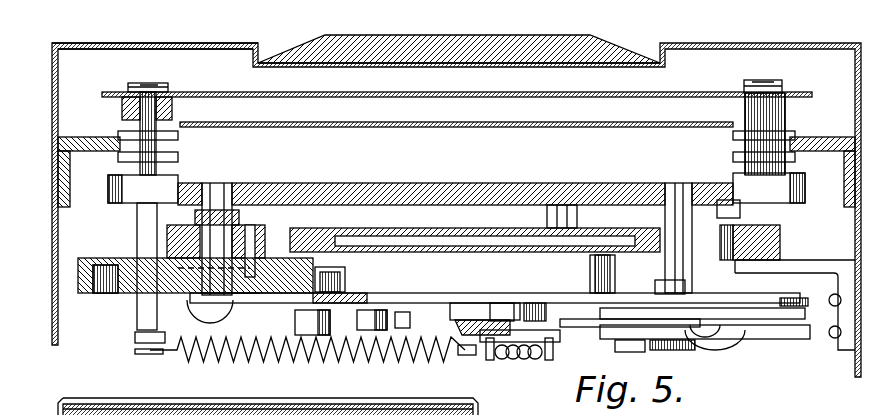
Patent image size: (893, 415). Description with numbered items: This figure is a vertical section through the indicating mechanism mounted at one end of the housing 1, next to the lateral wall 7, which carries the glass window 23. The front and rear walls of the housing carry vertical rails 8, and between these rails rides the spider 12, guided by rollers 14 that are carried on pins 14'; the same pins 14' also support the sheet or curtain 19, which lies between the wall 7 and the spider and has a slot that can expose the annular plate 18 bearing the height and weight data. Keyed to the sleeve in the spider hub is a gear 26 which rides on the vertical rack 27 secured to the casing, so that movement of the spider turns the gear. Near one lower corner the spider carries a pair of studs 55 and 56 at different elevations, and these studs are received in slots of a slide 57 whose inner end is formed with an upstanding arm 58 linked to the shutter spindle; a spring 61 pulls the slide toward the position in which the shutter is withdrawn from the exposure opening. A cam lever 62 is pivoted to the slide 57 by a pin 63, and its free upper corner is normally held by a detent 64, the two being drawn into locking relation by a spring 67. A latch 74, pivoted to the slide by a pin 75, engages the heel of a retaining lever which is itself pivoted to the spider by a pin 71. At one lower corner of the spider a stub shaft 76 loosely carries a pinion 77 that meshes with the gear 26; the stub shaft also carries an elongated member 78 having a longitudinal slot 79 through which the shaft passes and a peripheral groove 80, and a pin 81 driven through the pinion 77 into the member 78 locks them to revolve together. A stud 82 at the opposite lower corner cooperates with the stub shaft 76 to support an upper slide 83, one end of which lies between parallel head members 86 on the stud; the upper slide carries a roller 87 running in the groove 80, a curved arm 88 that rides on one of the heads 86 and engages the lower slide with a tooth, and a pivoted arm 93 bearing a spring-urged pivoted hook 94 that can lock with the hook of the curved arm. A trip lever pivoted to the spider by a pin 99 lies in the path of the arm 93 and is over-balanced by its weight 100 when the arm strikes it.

The housing 1 is at (55, 285).
The lateral wall 7 is at (130, 43).
The vertical rails 8 is at (95, 137).
The spider 12 is at (460, 183).
The rollers 14 is at (747, 141).
The pins 14' is at (165, 218).
The annular plate 18 is at (492, 122).
The sheet or curtain 19 is at (345, 97).
The glass window 23 is at (490, 42).
The gear 26 is at (452, 240).
The vertical rack 27 is at (780, 241).
The stud 55 is at (550, 220).
The stud 56 is at (740, 208).
The slide 57 is at (795, 306).
The upstanding arm 58 is at (470, 320).
The spring 61 is at (262, 362).
The cam lever 62 is at (570, 342).
The pin 63 is at (680, 345).
The detent 64 is at (490, 360).
The spring 67 is at (522, 360).
The pin 71 is at (602, 274).
The latch 74 is at (757, 340).
The pin 75 is at (633, 348).
The stub shaft 76 is at (220, 183).
The pinion 77 is at (185, 240).
The elongated member 78 is at (128, 294).
The longitudinal slot 79 is at (195, 290).
The peripheral groove 80 is at (110, 292).
The pin 81 is at (250, 200).
The stud 82 is at (676, 200).
The upper slide 83 is at (440, 293).
The head members 86 is at (672, 280).
The roller 87 is at (322, 272).
The curved arm 88 is at (610, 342).
The arm 93 is at (498, 303).
The pivoted hook 94 is at (533, 303).
The pin 99 is at (380, 332).
The weight 100 is at (305, 340).